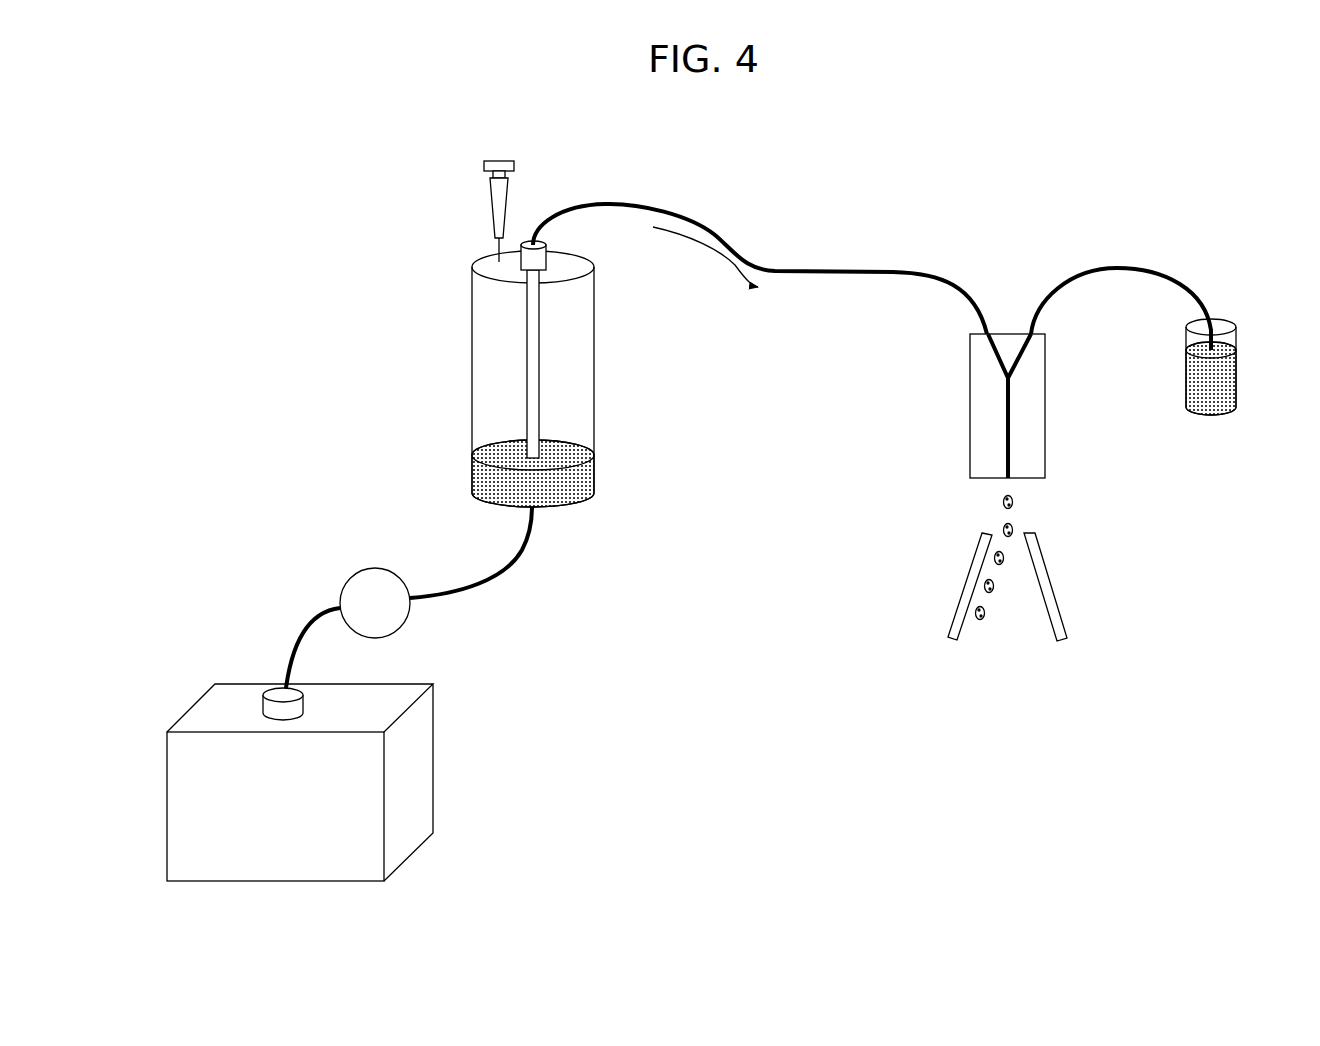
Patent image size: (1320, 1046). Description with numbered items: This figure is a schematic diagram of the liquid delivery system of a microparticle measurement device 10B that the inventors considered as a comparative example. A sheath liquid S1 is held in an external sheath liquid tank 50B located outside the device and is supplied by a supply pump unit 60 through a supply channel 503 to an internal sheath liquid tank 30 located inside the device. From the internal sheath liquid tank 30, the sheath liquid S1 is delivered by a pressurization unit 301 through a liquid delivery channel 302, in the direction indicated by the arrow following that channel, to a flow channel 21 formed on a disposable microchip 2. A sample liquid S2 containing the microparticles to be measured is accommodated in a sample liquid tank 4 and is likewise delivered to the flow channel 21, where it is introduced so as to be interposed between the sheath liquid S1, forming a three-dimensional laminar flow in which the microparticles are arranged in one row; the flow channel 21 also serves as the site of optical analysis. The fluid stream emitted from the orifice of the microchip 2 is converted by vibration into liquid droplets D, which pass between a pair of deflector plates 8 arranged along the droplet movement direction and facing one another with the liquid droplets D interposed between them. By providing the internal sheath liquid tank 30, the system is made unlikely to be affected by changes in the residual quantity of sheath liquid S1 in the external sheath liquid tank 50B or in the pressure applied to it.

The microparticle measurement device 10B is at (258, 165).
The pressurization unit 301 is at (505, 160).
The internal sheath liquid tank 30 is at (594, 341).
The sheath liquid S1 is at (573, 485).
The liquid delivery channel 302 is at (850, 272).
The microchip 2 is at (970, 407).
The flow channel 21 is at (1010, 428).
The sample liquid tank 4 is at (1222, 318).
The sample liquid S2 is at (1206, 397).
The liquid droplets D is at (983, 620).
The deflector plates 8 is at (1056, 596).
The supply pump unit 60 is at (372, 568).
The supply channel 503 is at (490, 587).
The external sheath liquid tank 50B is at (413, 778).